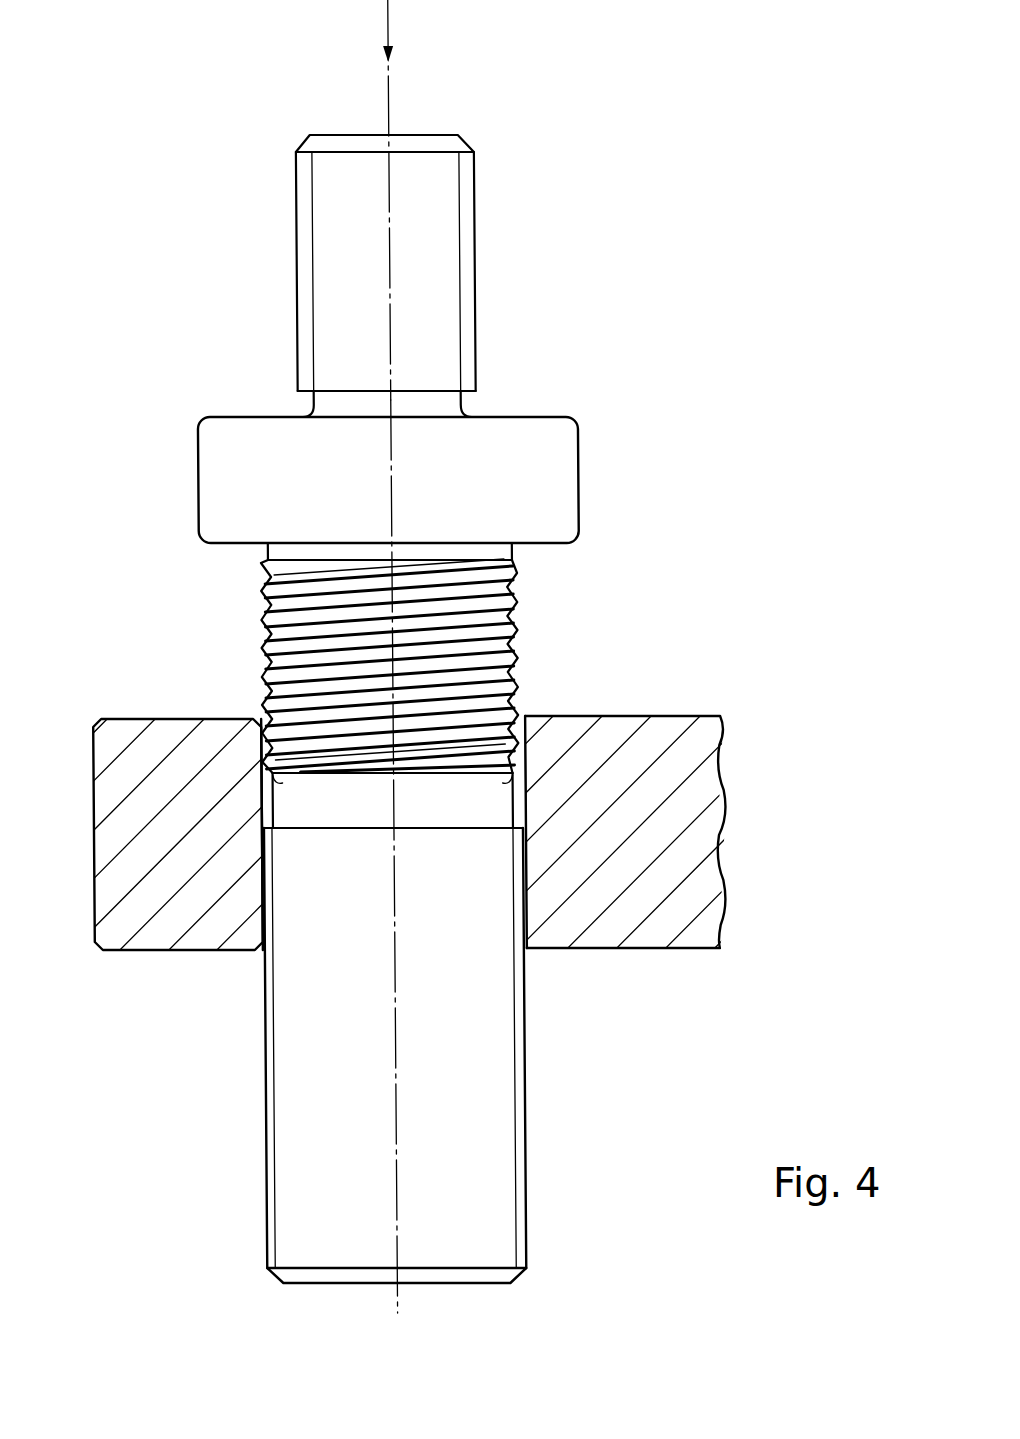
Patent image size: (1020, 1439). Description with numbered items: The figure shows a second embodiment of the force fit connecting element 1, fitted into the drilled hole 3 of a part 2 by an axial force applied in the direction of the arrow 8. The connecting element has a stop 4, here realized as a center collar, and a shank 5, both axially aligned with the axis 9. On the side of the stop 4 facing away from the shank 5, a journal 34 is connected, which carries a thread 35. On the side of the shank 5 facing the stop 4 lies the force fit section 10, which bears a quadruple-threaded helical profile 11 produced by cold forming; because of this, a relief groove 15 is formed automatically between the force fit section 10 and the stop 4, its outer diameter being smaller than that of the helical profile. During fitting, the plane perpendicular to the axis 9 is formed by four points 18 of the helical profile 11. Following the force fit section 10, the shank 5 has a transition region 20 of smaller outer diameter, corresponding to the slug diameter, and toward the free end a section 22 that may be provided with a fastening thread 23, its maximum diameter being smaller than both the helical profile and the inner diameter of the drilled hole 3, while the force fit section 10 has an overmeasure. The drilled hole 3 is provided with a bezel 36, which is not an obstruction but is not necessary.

The force fit connecting element 1 is at (606, 272).
The part 2 is at (673, 894).
The drilled hole 3 is at (528, 802).
The stop 4 is at (538, 455).
The shank 5 is at (473, 1010).
The arrow 8 is at (388, 30).
The axis 9 is at (500, 856).
The force fit section 10 is at (213, 770).
The multiple-threaded helical profile 11 is at (532, 626).
The relief groove 15 is at (505, 552).
The points 18 is at (275, 787).
The transition region 20 is at (338, 900).
The section 22 is at (235, 1048).
The fastening thread 23 is at (268, 1127).
The journal 34 is at (426, 220).
The thread 35 is at (468, 247).
The bezel 36 is at (495, 698).